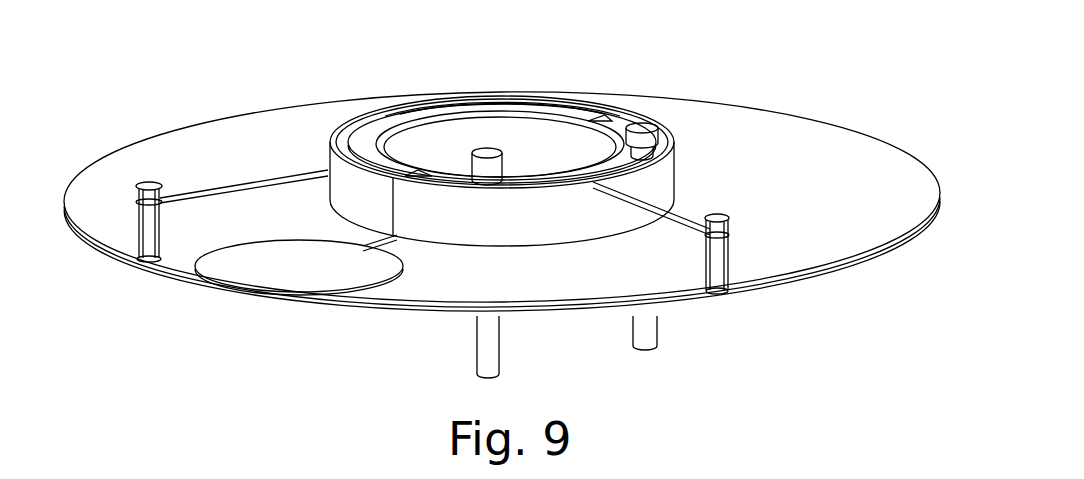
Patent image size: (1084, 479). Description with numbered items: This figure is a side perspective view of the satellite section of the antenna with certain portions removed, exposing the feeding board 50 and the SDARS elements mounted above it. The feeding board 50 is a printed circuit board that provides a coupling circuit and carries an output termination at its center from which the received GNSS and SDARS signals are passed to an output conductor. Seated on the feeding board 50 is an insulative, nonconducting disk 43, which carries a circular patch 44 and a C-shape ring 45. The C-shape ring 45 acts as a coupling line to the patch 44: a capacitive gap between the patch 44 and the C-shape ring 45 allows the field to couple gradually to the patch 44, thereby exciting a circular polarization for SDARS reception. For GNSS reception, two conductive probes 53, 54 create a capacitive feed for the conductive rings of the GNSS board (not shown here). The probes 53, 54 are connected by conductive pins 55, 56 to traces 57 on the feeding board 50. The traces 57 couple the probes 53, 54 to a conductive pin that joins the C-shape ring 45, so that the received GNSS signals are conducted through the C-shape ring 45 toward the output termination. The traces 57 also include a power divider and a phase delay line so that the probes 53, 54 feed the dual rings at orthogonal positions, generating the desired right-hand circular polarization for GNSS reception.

The disk 43 is at (660, 185).
The patch 44 is at (558, 133).
The C-shape ring 45 is at (366, 148).
The feeding board 50 is at (740, 130).
The conductive probe 53 is at (682, 227).
The conductive probe 54 is at (210, 188).
The conductive pin 55 is at (143, 237).
The conductive pin 56 is at (728, 262).
The traces 57 is at (373, 302).